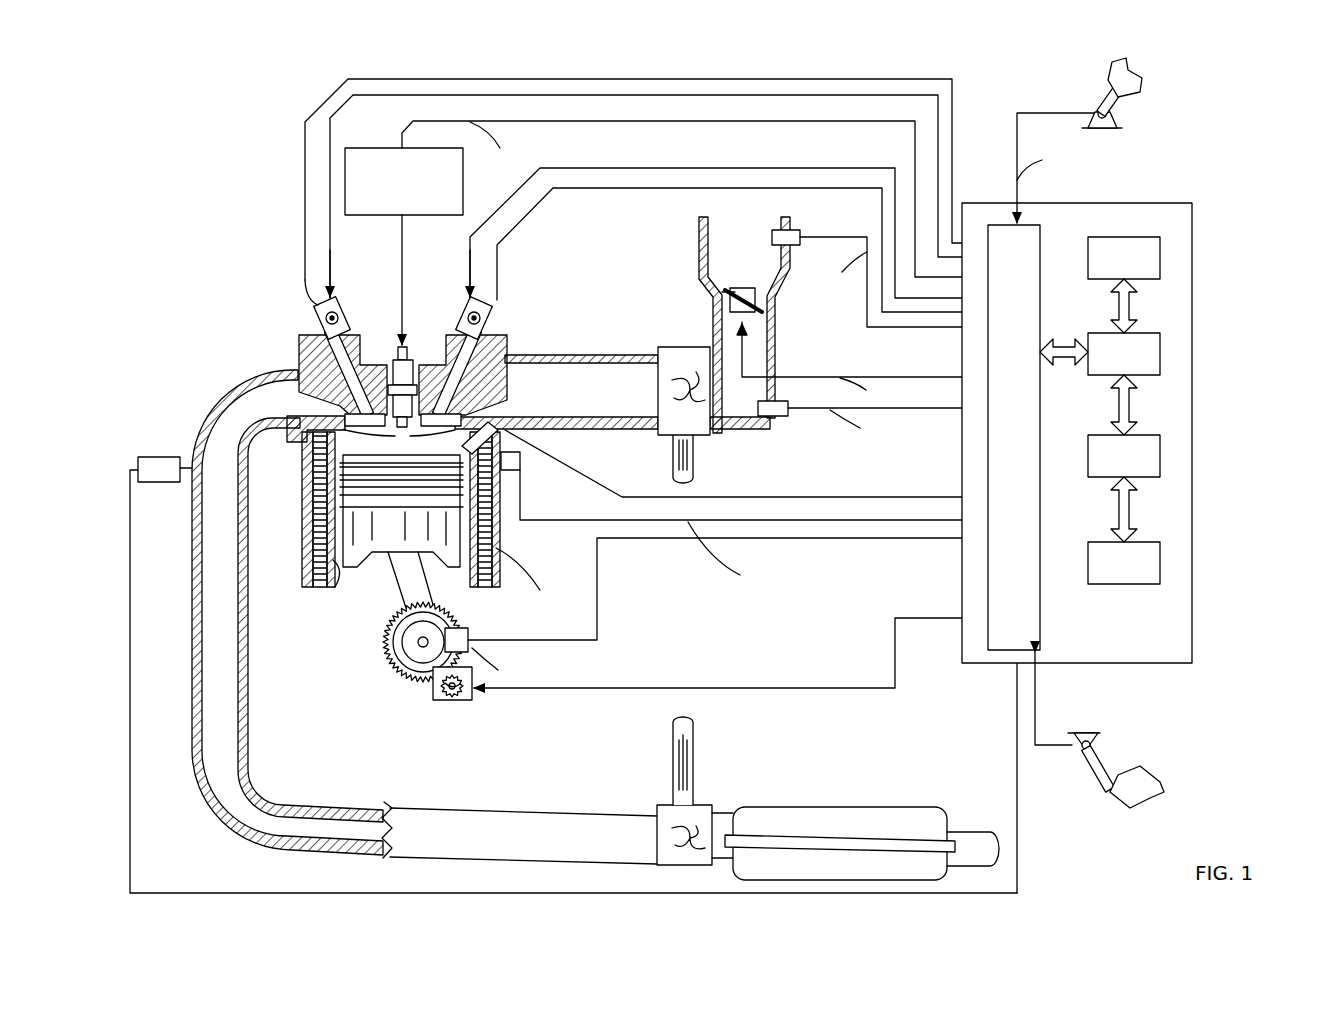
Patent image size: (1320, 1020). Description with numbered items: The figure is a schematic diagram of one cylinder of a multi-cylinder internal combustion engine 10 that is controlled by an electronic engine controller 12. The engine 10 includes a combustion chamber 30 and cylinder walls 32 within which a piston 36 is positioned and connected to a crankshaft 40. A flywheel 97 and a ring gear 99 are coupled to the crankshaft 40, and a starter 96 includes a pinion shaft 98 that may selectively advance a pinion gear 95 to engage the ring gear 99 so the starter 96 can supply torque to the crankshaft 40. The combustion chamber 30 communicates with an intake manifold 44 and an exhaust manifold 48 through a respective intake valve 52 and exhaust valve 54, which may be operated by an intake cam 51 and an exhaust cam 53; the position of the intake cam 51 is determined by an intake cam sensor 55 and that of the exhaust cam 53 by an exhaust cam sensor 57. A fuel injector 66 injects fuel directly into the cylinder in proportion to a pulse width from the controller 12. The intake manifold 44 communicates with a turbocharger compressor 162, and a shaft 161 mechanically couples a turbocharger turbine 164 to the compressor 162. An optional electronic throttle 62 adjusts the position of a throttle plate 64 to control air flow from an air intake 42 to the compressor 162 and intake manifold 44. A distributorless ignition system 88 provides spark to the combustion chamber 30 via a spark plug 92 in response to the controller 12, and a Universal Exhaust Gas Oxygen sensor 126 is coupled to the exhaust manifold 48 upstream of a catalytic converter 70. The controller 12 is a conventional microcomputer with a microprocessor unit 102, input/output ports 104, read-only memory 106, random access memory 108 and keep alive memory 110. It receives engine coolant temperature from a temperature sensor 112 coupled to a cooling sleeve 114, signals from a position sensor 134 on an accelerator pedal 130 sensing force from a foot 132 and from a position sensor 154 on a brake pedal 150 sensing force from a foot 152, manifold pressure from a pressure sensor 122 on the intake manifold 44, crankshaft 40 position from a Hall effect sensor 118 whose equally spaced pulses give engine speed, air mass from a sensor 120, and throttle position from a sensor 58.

The internal combustion engine 10 is at (232, 290).
The electronic engine controller 12 is at (1122, 418).
The combustion chamber 30 is at (320, 545).
The cylinder walls 32 is at (335, 597).
The piston 36 is at (385, 560).
The crankshaft 40 is at (405, 672).
The air intake 42 is at (756, 266).
The intake manifold 44 is at (594, 402).
The exhaust manifold 48 is at (278, 414).
The intake cam 51 is at (458, 290).
The intake valve 52 is at (445, 405).
The exhaust cam 53 is at (350, 290).
The exhaust valve 54 is at (345, 395).
The intake cam sensor 55 is at (485, 318).
The exhaust cam sensor 57 is at (322, 322).
The throttle position sensor 58 is at (730, 318).
The electronic throttle 62 is at (762, 302).
The throttle plate 64 is at (725, 292).
The fuel injector 66 is at (498, 440).
The catalytic converter 70 is at (775, 807).
The distributorless ignition system 88 is at (360, 148).
The spark plug 92 is at (415, 350).
The pinion gear 95 is at (455, 700).
The starter 96 is at (465, 700).
The flywheel 97 is at (390, 652).
The pinion shaft 98 is at (447, 698).
The ring gear 99 is at (415, 680).
The microprocessor unit 102 is at (1160, 350).
The input/output ports 104 is at (1040, 232).
The read-only memory 106 is at (1160, 258).
The random access memory 108 is at (1160, 452).
The keep alive memory 110 is at (1160, 558).
The temperature sensor 112 is at (520, 470).
The cooling sleeve 114 is at (518, 570).
The Hall effect sensor 118 is at (468, 632).
The air mass sensor 120 is at (795, 230).
The pressure sensor 122 is at (780, 416).
The Universal Exhaust Gas Oxygen sensor 126 is at (138, 468).
The accelerator pedal 130 is at (1138, 131).
The foot 132 is at (1135, 66).
The position sensor 134 is at (1120, 118).
The brake pedal 150 is at (1099, 736).
The foot 152 is at (1140, 768).
The position sensor 154 is at (1080, 742).
The shaft 161 is at (693, 770).
The turbocharger compressor 162 is at (658, 347).
The turbocharger turbine 164 is at (660, 805).